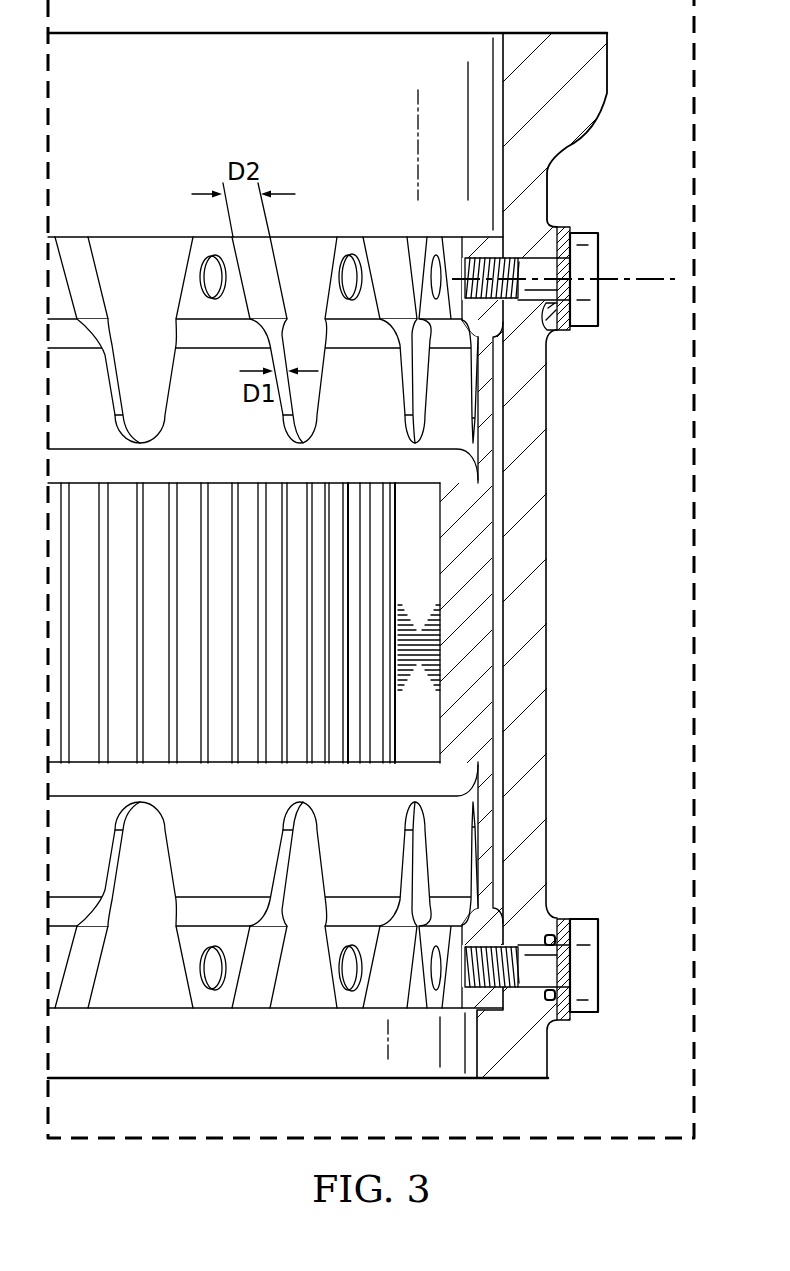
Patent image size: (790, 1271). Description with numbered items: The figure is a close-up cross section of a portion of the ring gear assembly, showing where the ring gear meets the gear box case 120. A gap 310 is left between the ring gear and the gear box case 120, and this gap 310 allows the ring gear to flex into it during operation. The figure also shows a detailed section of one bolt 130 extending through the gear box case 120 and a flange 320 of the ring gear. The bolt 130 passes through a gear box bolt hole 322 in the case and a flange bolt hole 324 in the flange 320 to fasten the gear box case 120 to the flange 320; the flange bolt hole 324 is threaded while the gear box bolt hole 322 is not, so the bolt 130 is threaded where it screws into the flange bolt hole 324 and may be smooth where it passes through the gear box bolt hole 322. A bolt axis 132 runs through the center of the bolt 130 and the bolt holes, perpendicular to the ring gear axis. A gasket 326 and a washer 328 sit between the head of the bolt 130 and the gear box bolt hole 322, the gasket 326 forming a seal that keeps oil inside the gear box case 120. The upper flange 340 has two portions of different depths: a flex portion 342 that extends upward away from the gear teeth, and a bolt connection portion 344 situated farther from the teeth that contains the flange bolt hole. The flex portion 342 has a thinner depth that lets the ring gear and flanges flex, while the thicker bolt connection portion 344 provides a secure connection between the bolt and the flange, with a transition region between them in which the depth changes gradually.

The gear box case 120 is at (612, 98).
The bolt 130 is at (602, 262).
The bolt axis 132 is at (640, 281).
The gap 310 is at (523, 560).
The flange 320 is at (462, 247).
The gear box bolt hole 322 is at (538, 258).
The flange bolt hole 324 is at (460, 330).
The gasket 326 is at (547, 341).
The washer 328 is at (564, 228).
The upper flange 340 is at (180, 232).
The flex portion 342 is at (207, 375).
The bolt connection portion 344 is at (185, 275).